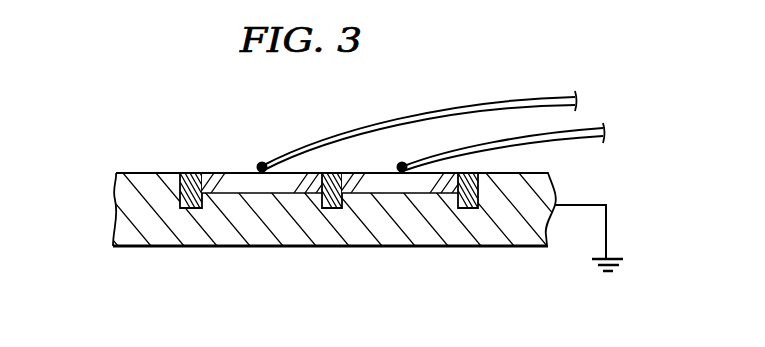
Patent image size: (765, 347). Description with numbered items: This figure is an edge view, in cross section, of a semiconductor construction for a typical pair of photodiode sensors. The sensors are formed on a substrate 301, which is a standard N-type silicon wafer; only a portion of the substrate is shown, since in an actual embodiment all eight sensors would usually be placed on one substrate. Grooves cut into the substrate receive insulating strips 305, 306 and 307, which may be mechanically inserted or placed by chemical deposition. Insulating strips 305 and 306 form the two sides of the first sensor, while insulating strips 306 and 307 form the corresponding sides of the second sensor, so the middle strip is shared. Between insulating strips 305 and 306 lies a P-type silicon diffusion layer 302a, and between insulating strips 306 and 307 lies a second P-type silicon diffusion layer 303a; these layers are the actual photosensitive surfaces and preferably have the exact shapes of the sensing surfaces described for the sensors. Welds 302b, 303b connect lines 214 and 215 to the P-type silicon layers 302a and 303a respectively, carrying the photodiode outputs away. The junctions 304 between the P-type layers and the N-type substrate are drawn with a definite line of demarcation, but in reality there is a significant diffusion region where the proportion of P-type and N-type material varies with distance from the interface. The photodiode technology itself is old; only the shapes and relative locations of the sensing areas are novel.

The substrate 301 is at (128, 207).
The junctions 304 is at (276, 194).
The insulating strip 305 is at (185, 172).
The P-type silicon diffusion layer 302a is at (218, 172).
The weld 302b is at (261, 163).
The insulating strip 306 is at (330, 172).
The P-type silicon diffusion layer 303a is at (355, 172).
The weld 303b is at (409, 166).
The insulating strip 307 is at (482, 172).
The line 214 is at (430, 118).
The line 215 is at (501, 145).